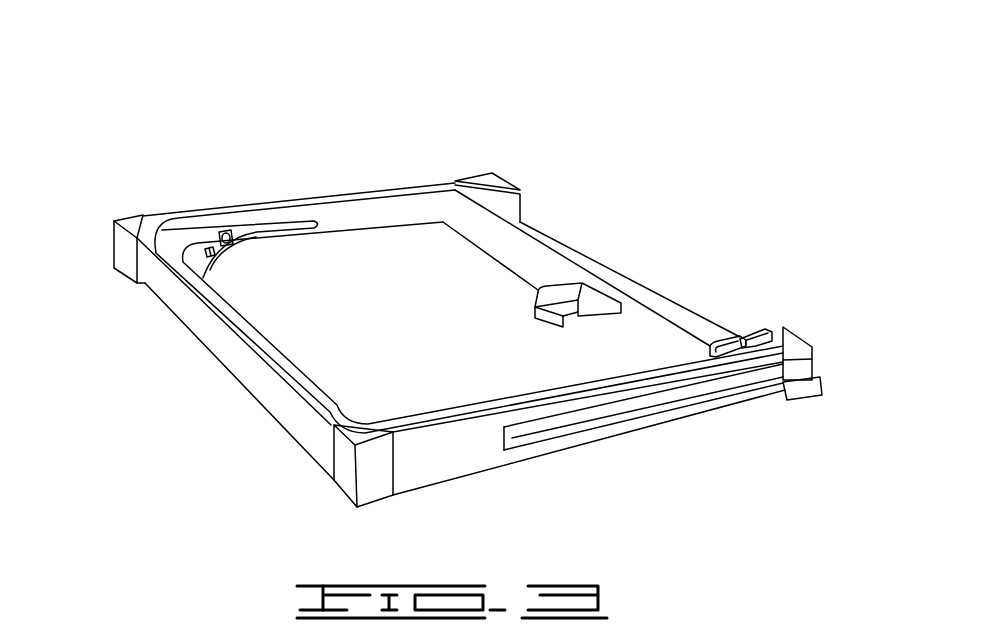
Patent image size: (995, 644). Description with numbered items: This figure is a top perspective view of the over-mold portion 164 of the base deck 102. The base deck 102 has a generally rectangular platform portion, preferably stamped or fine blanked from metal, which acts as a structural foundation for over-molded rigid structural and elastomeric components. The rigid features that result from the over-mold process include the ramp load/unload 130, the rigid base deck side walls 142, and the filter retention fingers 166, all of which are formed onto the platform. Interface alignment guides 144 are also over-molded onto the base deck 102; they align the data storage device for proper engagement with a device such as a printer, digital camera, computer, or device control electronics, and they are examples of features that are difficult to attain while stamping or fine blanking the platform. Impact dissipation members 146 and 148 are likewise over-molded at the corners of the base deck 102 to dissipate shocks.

The base deck 102 is at (278, 100).
The ramp load/unload 130 is at (535, 308).
The side walls 142 is at (190, 362).
The interface alignment guides 144 is at (630, 420).
The impact dissipation member 146 is at (488, 177).
The impact dissipation member 148 is at (130, 225).
The over-mold portion 164 is at (598, 240).
The filter retention fingers 166 is at (227, 233).